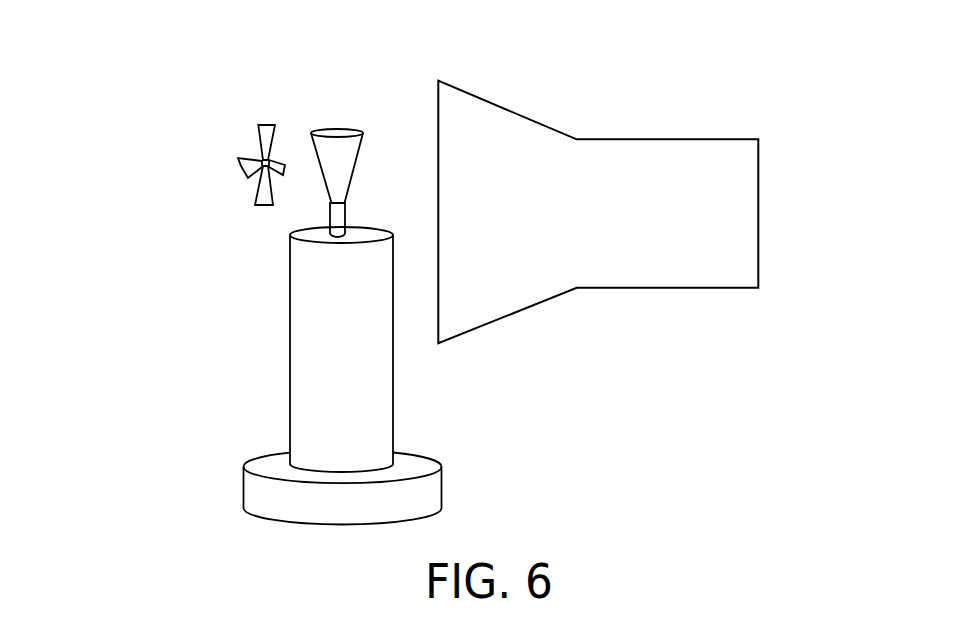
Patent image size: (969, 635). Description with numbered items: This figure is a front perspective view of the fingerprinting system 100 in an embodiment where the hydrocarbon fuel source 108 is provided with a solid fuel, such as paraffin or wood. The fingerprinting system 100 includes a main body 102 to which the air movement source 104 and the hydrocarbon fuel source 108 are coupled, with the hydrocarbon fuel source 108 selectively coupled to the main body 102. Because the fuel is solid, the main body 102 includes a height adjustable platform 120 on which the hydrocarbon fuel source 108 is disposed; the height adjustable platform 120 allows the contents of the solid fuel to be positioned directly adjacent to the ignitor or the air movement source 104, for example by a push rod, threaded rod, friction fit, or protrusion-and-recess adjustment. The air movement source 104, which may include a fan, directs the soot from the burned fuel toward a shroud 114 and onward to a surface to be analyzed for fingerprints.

The fingerprinting system 100 is at (160, 56).
The main body 102 is at (227, 492).
The air movement source 104 is at (253, 203).
The hydrocarbon fuel source 108 is at (274, 391).
The horn 114 is at (548, 298).
The height adjustable platform 120 is at (375, 228).